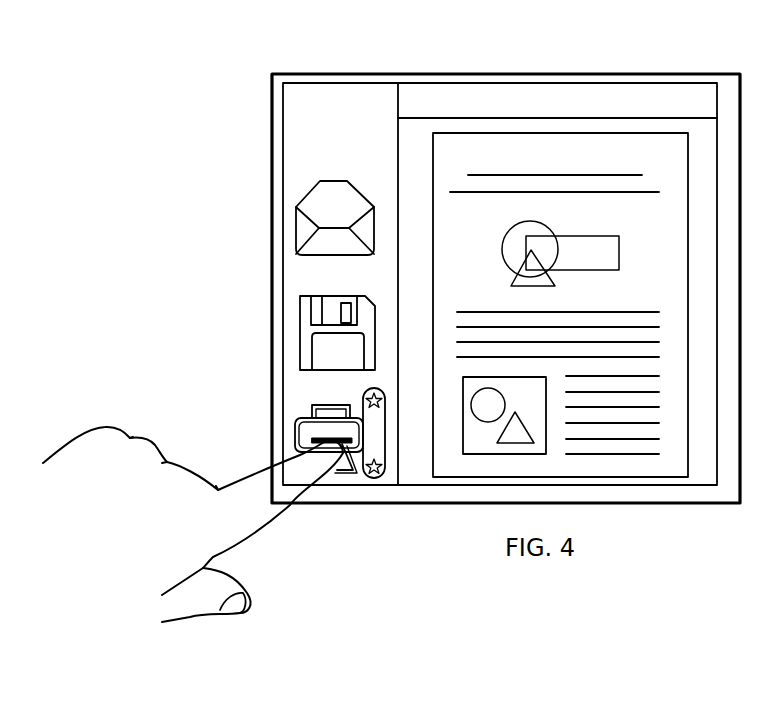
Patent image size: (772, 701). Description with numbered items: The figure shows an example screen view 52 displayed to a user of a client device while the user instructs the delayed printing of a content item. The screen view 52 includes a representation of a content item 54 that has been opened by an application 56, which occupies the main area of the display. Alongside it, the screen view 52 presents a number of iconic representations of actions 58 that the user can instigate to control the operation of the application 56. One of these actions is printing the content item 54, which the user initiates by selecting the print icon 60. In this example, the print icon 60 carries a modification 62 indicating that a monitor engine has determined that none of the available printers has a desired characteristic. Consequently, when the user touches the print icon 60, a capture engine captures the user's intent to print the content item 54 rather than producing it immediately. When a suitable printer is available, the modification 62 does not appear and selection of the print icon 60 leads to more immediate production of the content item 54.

The screen view 52 is at (607, 74).
The content item 54 is at (443, 218).
The application 56 is at (490, 100).
The actions 58 is at (283, 128).
The print icon 60 is at (290, 440).
The modification 62 is at (387, 432).